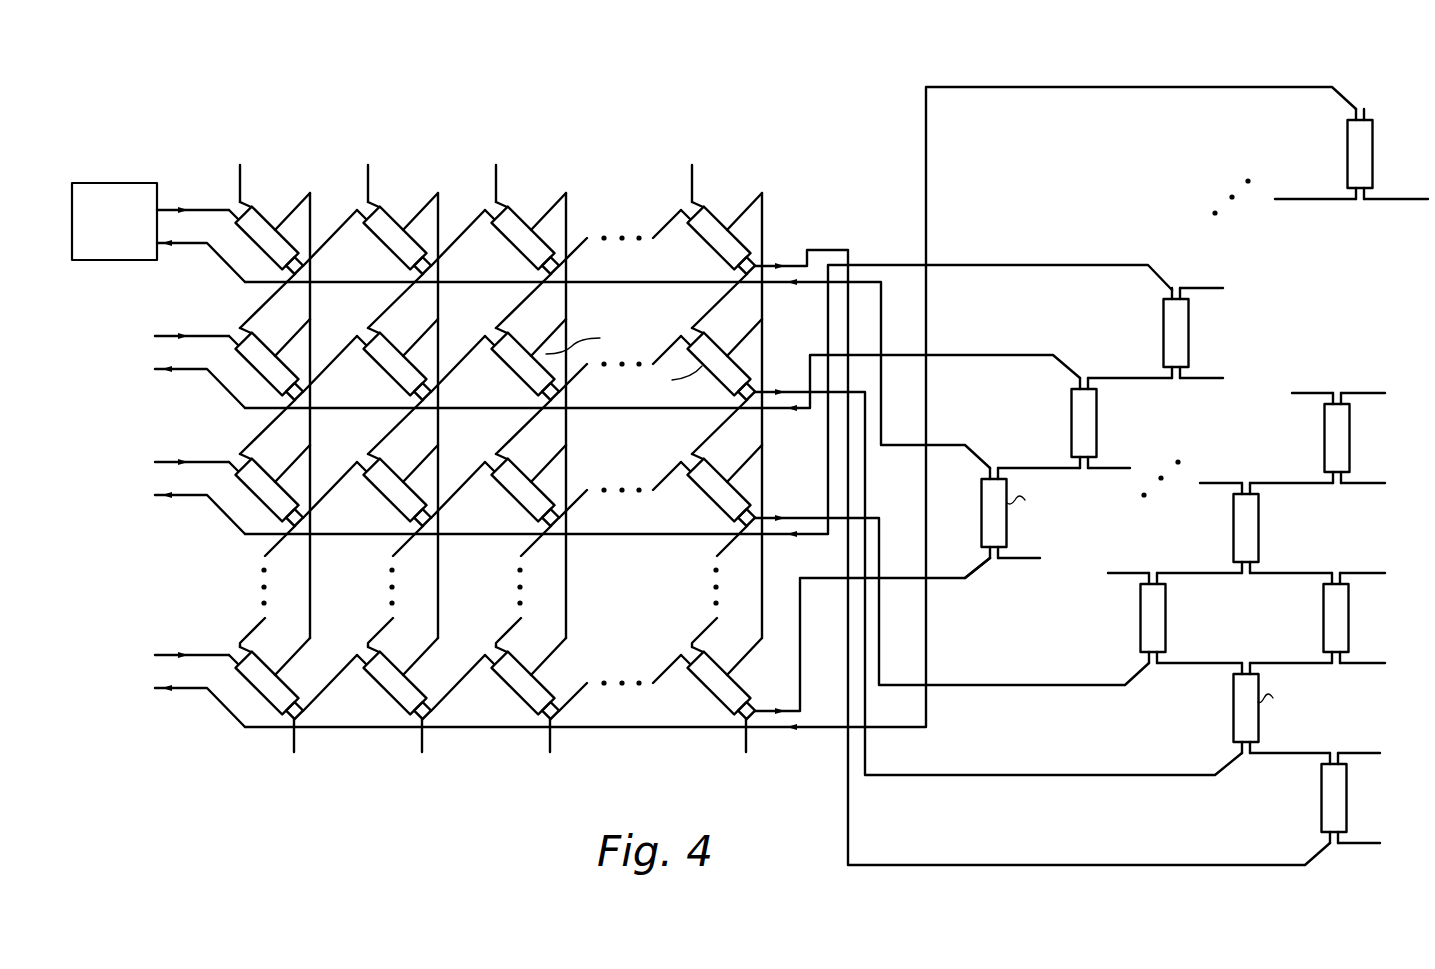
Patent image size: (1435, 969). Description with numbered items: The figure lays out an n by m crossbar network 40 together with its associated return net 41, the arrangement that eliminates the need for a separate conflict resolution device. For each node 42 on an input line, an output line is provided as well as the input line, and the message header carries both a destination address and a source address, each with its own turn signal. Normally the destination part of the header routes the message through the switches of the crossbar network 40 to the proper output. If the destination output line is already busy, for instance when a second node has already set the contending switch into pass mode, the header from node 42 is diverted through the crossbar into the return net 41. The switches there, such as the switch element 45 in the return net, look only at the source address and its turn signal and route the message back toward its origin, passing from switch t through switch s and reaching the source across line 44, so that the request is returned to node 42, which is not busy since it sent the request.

The crossbar network 40 is at (116, 323).
The return net 41 is at (1190, 454).
The node 42 is at (120, 182).
The line 44 is at (594, 282).
The switch element 45 is at (1012, 469).